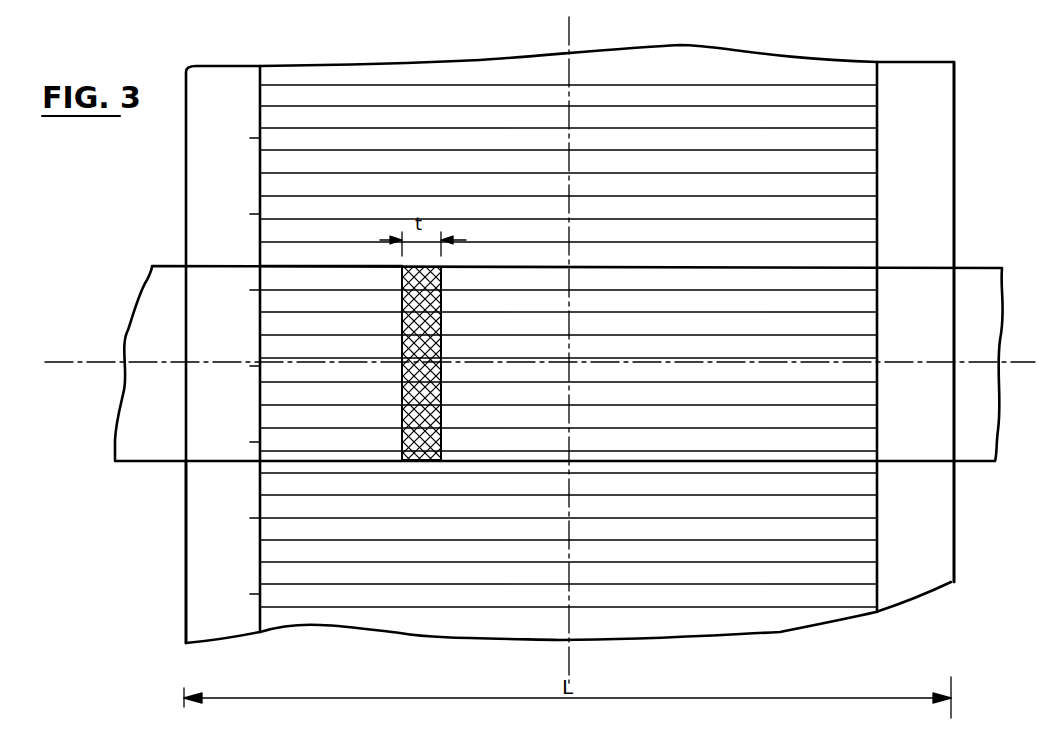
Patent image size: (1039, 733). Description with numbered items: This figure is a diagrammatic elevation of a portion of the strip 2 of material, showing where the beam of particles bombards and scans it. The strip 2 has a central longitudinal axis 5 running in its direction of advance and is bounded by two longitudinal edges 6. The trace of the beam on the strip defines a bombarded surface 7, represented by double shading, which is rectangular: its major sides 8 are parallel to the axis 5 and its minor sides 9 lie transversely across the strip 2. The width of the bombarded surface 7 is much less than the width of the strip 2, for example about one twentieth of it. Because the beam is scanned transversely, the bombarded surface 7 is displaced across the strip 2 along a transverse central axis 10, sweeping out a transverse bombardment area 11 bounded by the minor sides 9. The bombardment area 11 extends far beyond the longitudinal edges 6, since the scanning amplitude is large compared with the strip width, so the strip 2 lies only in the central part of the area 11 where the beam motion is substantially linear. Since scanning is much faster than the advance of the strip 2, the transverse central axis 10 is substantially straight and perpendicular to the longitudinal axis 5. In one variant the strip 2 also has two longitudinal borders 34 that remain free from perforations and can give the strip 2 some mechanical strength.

The strip 2 is at (208, 150).
The central longitudinal axis 5 is at (570, 42).
The longitudinal edges 6 is at (955, 332).
The bombarded surface 7 is at (258, 280).
The major sides 8 is at (402, 438).
The minor sides 9 is at (425, 456).
The transverse central axis 10 is at (95, 362).
The transverse bombardment area 11 is at (140, 434).
The longitudinal borders 34 is at (200, 578).